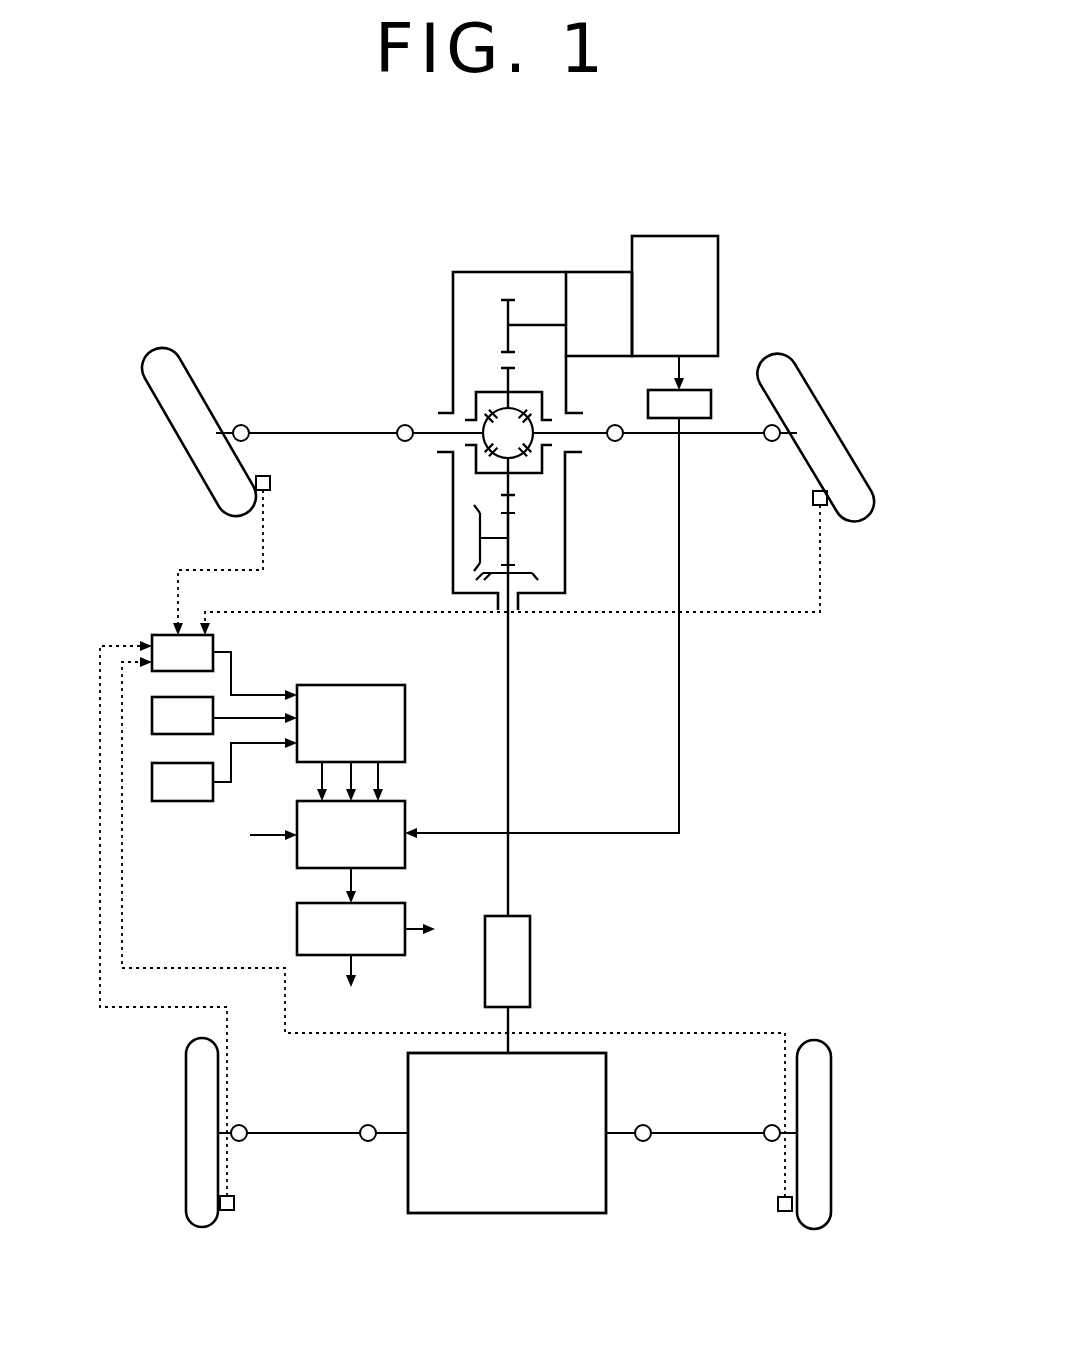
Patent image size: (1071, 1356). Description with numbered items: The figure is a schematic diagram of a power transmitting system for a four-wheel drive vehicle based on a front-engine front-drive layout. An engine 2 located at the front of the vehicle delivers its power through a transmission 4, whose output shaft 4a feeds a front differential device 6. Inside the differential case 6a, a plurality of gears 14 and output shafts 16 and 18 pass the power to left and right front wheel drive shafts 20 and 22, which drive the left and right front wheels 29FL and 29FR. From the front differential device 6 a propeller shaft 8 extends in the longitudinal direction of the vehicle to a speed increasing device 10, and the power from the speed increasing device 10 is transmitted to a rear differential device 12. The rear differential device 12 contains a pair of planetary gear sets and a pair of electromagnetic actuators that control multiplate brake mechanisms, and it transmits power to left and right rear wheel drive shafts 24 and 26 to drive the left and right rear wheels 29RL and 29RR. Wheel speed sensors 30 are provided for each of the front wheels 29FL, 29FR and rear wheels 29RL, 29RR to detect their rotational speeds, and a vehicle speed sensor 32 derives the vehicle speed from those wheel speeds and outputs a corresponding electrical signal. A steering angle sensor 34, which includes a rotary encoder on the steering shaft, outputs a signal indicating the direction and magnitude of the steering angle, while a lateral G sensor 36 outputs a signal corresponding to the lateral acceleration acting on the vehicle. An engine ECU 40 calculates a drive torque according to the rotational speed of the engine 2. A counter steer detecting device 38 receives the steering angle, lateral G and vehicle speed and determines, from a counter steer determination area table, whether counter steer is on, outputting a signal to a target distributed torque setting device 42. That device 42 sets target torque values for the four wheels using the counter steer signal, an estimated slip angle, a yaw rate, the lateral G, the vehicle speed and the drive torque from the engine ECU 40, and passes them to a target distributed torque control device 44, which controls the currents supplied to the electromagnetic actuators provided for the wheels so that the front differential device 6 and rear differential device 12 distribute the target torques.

The engine 2 is at (718, 247).
The transmission 4 is at (593, 270).
The output shaft 4a is at (536, 323).
The front differential device 6 is at (462, 390).
The differential case 6a is at (542, 393).
The propeller shaft 8 is at (508, 745).
The speed increasing device 10 is at (530, 952).
The rear differential device 12 is at (507, 1214).
The gears 14 is at (500, 368).
The output shaft 16 is at (422, 440).
The output shaft 18 is at (592, 438).
The left front wheel drive shaft 20 is at (327, 432).
The right front wheel drive shaft 22 is at (716, 436).
The left rear wheel drive shaft 24 is at (312, 1130).
The right rear wheel drive shaft 26 is at (693, 1130).
The left front wheel 29FL is at (186, 434).
The right front wheel 29FR is at (830, 440).
The left rear wheel 29RL is at (186, 1134).
The right rear wheel 29RR is at (831, 1136).
The wheel speed sensors 30 is at (270, 483).
The vehicle speed sensor 32 is at (165, 640).
The steering angle sensor 34 is at (152, 718).
The lateral G sensor 36 is at (178, 801).
The counter steer detecting device 38 is at (350, 690).
The engine ECU 40 is at (710, 393).
The target distributed torque setting device 42 is at (393, 811).
The target distributed torque control device 44 is at (297, 930).